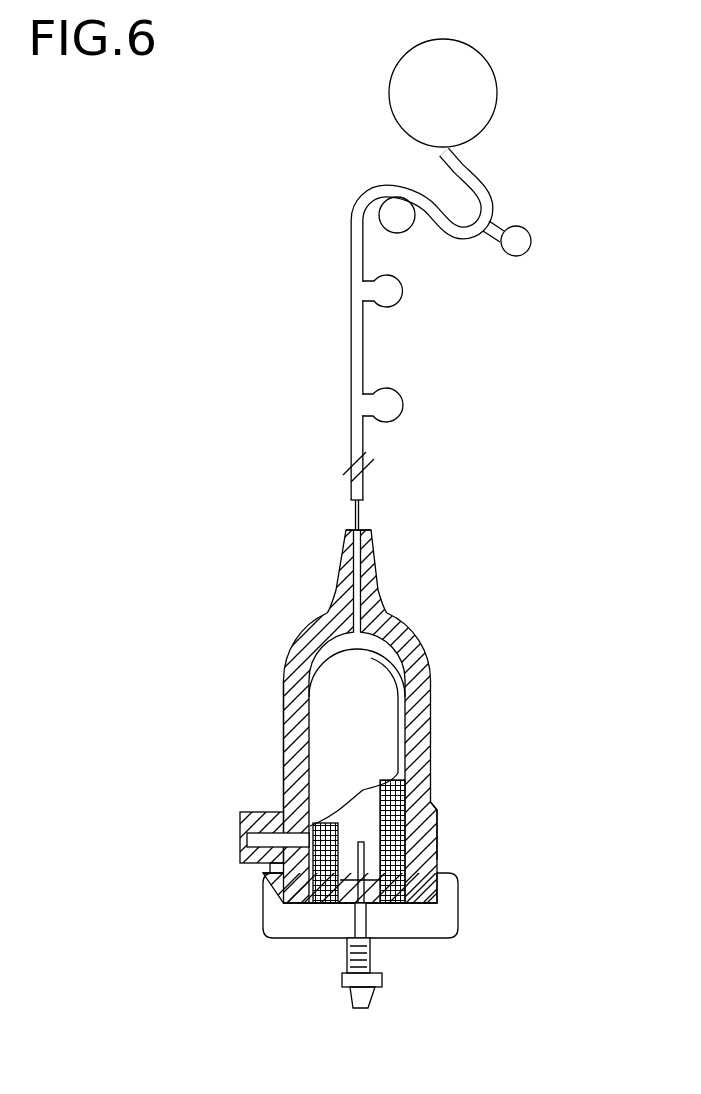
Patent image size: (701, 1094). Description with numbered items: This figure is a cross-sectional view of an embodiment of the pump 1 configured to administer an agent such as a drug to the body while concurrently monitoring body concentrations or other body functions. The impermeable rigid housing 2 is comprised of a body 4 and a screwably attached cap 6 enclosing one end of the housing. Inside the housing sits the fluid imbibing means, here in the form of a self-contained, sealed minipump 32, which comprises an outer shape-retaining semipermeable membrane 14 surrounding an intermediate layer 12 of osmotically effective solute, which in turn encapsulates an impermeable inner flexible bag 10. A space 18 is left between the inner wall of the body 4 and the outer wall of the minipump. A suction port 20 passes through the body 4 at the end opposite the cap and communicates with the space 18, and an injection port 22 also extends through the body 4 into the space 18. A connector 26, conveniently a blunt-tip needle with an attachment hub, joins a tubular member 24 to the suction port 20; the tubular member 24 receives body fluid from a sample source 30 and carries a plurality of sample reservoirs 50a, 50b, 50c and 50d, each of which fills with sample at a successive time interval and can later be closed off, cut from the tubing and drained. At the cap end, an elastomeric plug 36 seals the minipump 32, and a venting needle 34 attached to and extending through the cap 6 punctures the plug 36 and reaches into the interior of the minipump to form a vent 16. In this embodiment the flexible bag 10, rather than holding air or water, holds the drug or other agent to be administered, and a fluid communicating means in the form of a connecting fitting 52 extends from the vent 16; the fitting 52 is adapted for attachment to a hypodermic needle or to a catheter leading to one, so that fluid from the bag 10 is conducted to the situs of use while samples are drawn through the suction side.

The suction pump 1 is at (341, 755).
The rigid housing 2 is at (440, 678).
The body 4 is at (285, 765).
The cap 6 is at (277, 937).
The inner flexible bag 10 is at (405, 830).
The intermediate layer of osmotically effective solute 12 is at (423, 803).
The outer shape-retaining membrane 14 is at (402, 793).
The vent 16 is at (375, 940).
The space 18 is at (413, 627).
The suction port 20 is at (365, 530).
The injection port 22 is at (243, 838).
The tubular member 24 is at (366, 186).
The connector 26 is at (353, 512).
The sample source 30 is at (390, 92).
The minipump 32 is at (330, 713).
The venting needle 34 is at (370, 845).
The plug 36 is at (290, 875).
The sample reservoir 50a is at (530, 251).
The sample reservoir 50b is at (404, 236).
The sample reservoir 50c is at (396, 307).
The sample reservoir 50d is at (403, 406).
The connecting fitting 52 is at (340, 977).